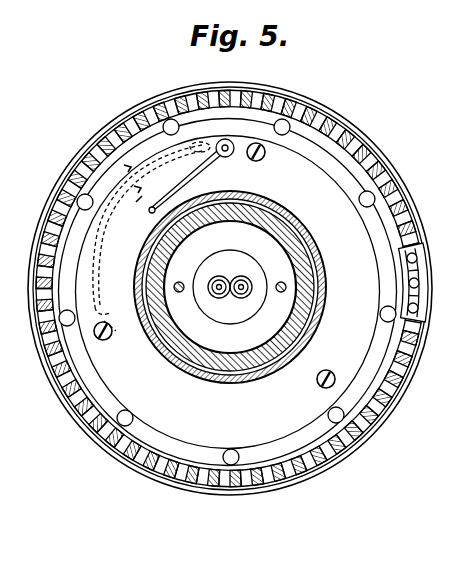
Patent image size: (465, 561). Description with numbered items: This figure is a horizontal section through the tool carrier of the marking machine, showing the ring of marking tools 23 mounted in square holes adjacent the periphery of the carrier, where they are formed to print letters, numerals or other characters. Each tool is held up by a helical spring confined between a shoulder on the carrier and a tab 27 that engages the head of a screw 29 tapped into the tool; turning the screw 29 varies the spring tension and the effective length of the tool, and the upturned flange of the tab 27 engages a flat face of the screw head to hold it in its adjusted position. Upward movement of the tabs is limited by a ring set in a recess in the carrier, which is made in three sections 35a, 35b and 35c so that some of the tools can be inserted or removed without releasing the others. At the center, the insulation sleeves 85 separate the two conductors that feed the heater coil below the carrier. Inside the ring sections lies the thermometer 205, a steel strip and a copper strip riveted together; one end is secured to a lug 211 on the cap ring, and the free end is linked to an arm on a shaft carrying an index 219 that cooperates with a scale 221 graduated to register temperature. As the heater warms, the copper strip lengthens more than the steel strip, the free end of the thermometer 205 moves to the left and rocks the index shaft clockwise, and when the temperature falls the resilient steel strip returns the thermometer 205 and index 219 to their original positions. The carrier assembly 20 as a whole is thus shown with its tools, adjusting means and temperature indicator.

The rotor disk 20 is at (242, 288).
The tools 23 is at (421, 262).
The tabs 27 is at (406, 258).
The screws 29 is at (408, 283).
The ring section 35a is at (269, 115).
The ring section 35b is at (370, 396).
The ring section 35c is at (93, 393).
The insulation sleeves 85 is at (239, 278).
The thermometer 205 is at (99, 236).
The lug 211 is at (128, 323).
The index 219 is at (200, 165).
The scale 221 is at (136, 202).